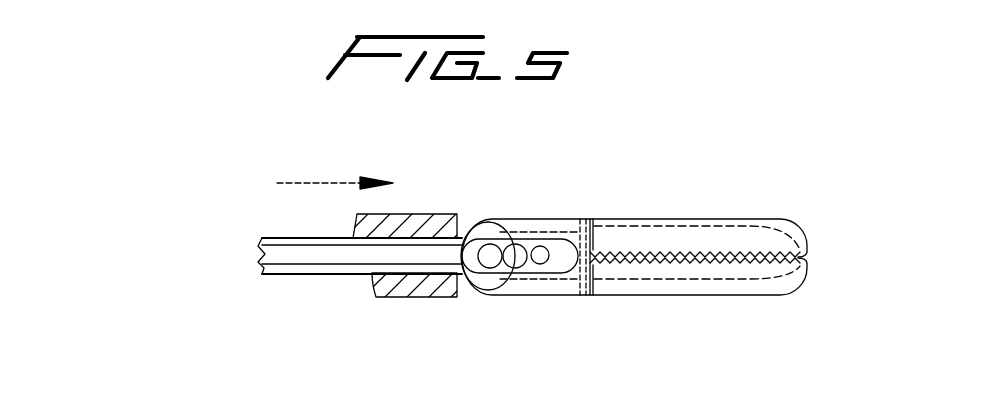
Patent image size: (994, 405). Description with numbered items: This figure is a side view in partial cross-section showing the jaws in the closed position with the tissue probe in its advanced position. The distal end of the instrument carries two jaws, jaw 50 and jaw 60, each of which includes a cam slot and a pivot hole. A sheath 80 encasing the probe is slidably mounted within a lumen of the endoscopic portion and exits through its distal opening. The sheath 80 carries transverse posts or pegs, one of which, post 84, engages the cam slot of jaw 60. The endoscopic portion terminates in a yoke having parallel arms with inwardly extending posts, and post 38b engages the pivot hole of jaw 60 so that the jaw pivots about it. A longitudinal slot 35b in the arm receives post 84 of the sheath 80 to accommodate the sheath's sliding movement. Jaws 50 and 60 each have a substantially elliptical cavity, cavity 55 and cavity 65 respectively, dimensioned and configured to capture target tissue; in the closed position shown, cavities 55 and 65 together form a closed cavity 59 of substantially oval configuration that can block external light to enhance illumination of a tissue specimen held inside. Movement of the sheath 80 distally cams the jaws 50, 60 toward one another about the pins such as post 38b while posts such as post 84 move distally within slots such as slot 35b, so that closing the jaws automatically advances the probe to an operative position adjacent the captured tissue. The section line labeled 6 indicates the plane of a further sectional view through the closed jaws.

The section line 6- 6 is at (245, 256).
The sheath 80 is at (415, 252).
The longitudinal slot 35b is at (492, 263).
The transverse post 84 is at (516, 263).
The post 38b is at (540, 246).
The jaw 50 is at (715, 247).
The cavity 55 is at (733, 218).
The closed cavity 59 is at (646, 237).
The jaw 60 is at (752, 287).
The cavity 65 is at (693, 279).